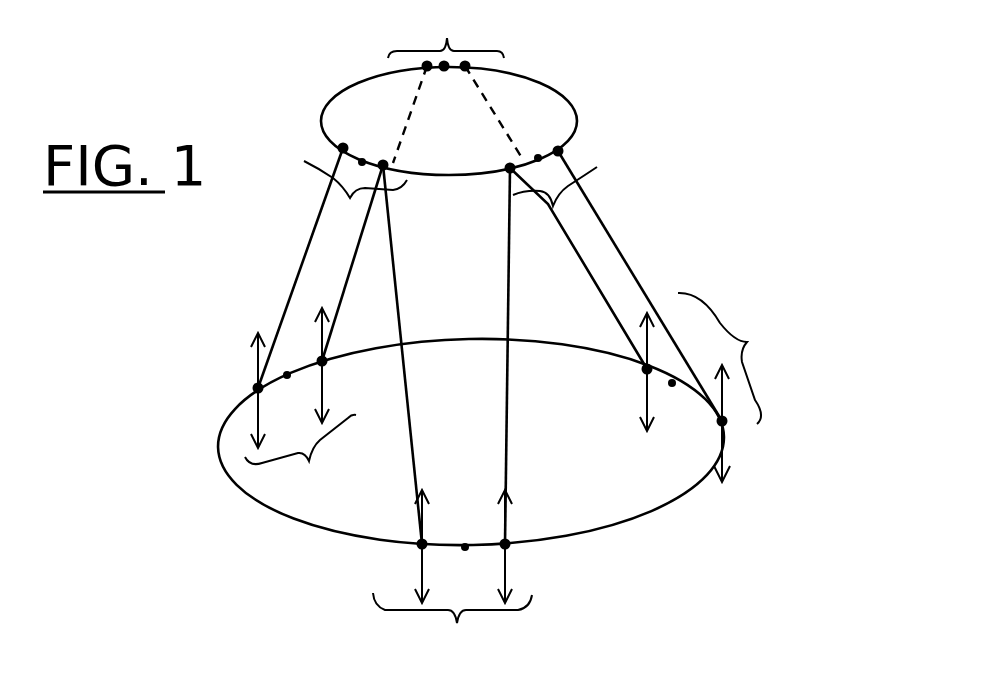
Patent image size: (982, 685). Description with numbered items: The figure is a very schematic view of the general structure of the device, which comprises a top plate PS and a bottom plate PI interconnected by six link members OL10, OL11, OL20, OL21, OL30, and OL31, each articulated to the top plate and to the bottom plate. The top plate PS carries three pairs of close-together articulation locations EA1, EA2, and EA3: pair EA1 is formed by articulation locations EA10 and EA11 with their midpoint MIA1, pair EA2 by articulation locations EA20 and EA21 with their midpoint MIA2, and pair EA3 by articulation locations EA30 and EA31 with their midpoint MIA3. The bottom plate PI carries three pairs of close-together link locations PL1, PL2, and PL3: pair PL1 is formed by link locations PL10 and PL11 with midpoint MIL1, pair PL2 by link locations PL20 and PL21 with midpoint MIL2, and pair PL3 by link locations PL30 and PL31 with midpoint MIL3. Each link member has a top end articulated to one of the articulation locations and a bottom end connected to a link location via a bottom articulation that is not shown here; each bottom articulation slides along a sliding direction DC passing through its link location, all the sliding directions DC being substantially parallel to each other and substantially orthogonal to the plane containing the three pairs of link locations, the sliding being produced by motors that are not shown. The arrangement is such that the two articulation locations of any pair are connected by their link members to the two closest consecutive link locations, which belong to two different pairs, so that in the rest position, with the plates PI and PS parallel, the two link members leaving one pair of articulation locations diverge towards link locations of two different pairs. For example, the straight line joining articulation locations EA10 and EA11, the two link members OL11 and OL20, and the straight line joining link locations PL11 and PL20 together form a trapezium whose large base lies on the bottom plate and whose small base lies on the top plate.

The top plate PS is at (565, 95).
The bottom plate PI is at (674, 501).
The pair of articulation locations EA2 is at (446, 34).
The articulation location EA21 is at (424, 68).
The articulation location EA20 is at (468, 67).
The midpoint of articulation locations MIA2 is at (444, 71).
The pair of articulation locations EA3 is at (355, 195).
The articulation location EA30 is at (343, 148).
The articulation location EA31 is at (365, 139).
The midpoint of articulation locations MIA3 is at (362, 162).
The pair of articulation locations EA1 is at (553, 207).
The articulation location EA10 is at (509, 171).
The articulation location EA11 is at (560, 151).
The midpoint of articulation locations MIA1 is at (538, 157).
The link member OL31 is at (309, 246).
The link member OL30 is at (343, 283).
The link member OL10 is at (413, 474).
The link member OL11 is at (509, 473).
The link member OL21 is at (566, 232).
The link member OL20 is at (617, 250).
The pair of link locations PL3 is at (300, 453).
The link location PL31 is at (256, 388).
The link location PL30 is at (322, 365).
The midpoint of link locations MIL3 is at (287, 374).
The pair of link locations PL2 is at (736, 358).
The link location PL21 is at (646, 369).
The link location PL20 is at (726, 425).
The midpoint of link locations MIL2 is at (672, 383).
The pair of link locations PL1 is at (452, 625).
The link location PL10 is at (418, 546).
The link location PL11 is at (508, 547).
The midpoint of link locations MIL1 is at (465, 545).
The sliding direction DC is at (725, 456).